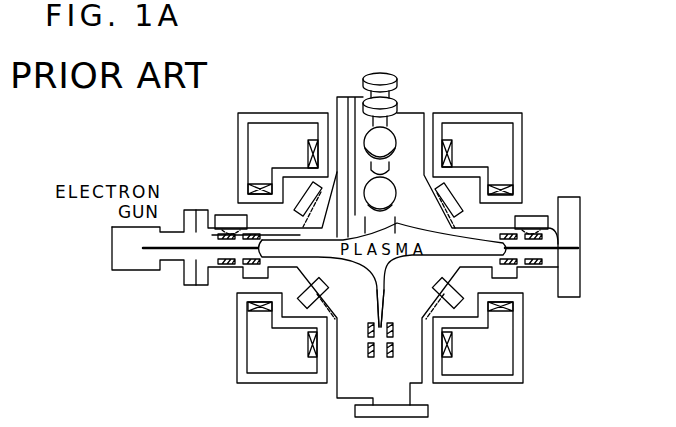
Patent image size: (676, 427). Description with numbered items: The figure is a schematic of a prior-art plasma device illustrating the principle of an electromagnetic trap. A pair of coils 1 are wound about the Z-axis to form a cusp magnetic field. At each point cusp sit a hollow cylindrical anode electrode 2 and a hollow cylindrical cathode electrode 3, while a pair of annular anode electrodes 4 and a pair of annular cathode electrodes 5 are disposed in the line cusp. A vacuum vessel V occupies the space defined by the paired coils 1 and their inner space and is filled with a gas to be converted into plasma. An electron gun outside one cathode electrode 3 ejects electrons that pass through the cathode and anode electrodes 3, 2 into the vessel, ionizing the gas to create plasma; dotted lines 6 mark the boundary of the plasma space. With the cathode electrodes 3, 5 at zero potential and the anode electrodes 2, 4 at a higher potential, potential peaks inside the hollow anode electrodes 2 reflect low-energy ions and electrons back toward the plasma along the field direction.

The coil 1 is at (485, 130).
The anode electrode 2 is at (252, 265).
The cathode electrode 3 is at (232, 265).
The annular anode electrode 4 is at (367, 332).
The annular cathode electrode 5 is at (365, 348).
The dotted lines 6 is at (388, 275).
The vacuum vessel V is at (272, 228).